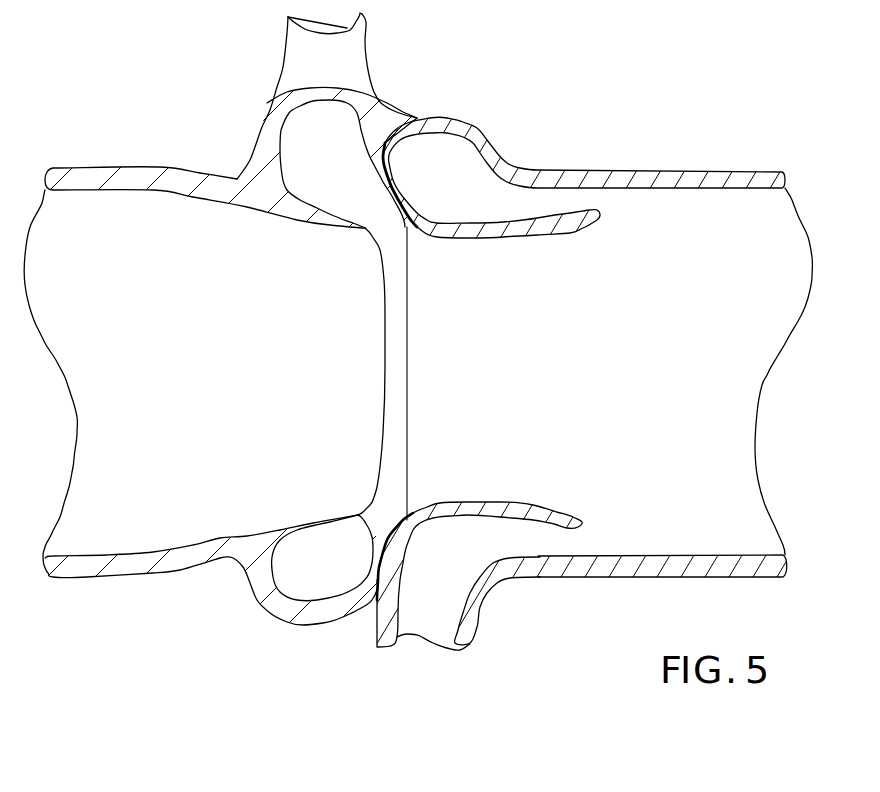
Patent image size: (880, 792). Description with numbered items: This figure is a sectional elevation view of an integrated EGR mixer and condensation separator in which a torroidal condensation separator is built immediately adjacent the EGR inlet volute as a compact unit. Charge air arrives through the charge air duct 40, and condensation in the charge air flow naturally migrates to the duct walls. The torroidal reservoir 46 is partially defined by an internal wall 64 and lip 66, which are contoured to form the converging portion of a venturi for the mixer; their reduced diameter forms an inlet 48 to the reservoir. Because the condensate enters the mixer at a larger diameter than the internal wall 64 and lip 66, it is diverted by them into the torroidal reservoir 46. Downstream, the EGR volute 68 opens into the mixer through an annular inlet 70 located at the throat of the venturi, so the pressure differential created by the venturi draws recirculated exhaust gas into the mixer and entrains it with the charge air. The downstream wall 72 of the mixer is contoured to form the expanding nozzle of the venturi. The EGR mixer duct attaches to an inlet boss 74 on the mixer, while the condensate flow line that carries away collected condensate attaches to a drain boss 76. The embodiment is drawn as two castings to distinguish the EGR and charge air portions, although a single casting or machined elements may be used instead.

The charge air duct 40 is at (687, 170).
The torroidal reservoir 46 is at (453, 172).
The inlet 48 is at (440, 396).
The internal wall 64 is at (480, 240).
The lip 66 is at (577, 237).
The EGR volute 68 is at (340, 573).
The annular inlet 70 is at (368, 207).
The downstream wall 72 is at (162, 200).
The inlet boss 74 is at (277, 57).
The drain boss 76 is at (477, 622).